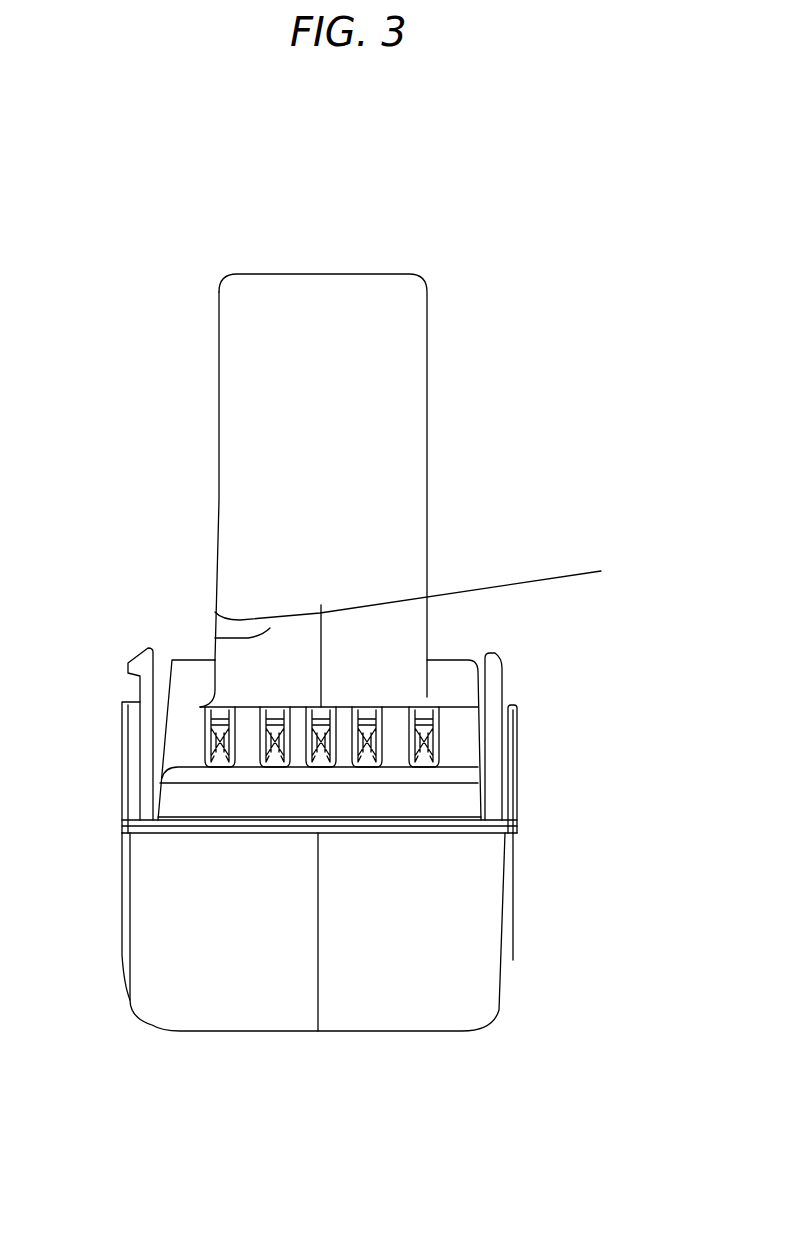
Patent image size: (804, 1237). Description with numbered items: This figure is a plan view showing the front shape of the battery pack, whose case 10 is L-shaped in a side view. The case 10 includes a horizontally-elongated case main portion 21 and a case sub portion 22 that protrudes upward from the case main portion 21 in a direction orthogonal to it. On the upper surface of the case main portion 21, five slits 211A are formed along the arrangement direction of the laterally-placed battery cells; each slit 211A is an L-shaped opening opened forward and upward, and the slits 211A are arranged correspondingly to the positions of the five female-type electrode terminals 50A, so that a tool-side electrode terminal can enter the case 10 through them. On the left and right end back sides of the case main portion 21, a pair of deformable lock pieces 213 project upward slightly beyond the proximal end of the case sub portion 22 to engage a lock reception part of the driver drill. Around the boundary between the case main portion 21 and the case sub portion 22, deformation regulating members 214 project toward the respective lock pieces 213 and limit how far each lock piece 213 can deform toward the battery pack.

The case 10 is at (430, 372).
The case sub portion 22 is at (322, 297).
The case main portion 21 is at (482, 993).
The lock piece 213 is at (153, 650).
The deformation regulating member 214 is at (203, 657).
The slit 211A is at (230, 707).
The electrode terminal 50A is at (228, 767).